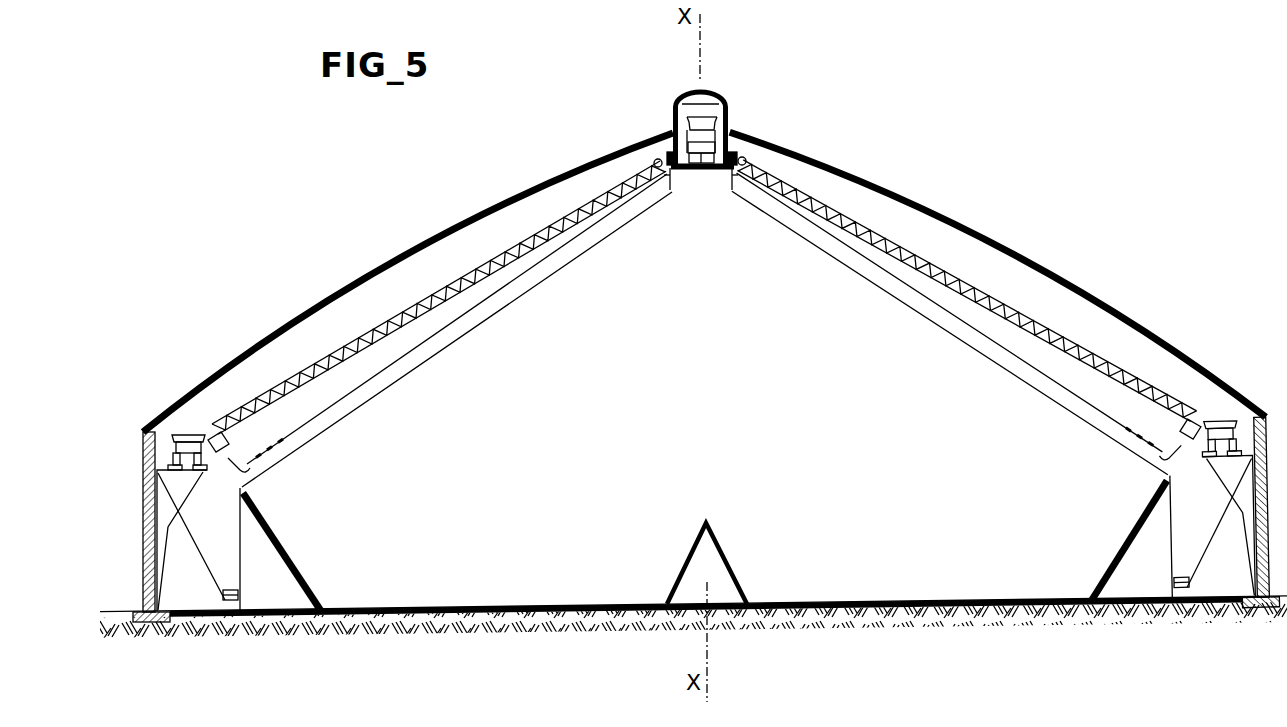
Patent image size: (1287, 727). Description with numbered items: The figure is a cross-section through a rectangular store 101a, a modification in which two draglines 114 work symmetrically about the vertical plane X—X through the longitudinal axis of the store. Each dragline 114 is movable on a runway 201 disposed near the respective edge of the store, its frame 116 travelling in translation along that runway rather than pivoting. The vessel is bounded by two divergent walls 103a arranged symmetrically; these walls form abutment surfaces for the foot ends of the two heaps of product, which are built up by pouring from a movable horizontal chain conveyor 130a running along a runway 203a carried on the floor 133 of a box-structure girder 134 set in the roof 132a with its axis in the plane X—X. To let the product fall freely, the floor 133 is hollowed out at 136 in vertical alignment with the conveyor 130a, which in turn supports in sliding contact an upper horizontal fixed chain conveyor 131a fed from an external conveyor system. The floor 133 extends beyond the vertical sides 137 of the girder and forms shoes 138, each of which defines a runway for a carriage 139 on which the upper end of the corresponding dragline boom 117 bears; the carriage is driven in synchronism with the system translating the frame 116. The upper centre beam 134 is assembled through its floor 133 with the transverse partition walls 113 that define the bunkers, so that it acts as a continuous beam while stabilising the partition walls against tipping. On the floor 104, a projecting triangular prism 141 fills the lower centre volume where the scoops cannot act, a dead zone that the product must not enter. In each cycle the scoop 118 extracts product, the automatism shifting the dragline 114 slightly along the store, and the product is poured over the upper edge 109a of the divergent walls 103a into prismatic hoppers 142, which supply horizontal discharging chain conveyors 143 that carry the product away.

The rectangular store 101a is at (1011, 248).
The divergent wall 103a is at (280, 548).
The floor 104 is at (462, 601).
The upper edge 109a is at (258, 480).
The transverse partition wall 113 is at (692, 330).
The dragline 114 is at (205, 428).
The frame 116 is at (158, 432).
The dragline boom 117 is at (438, 298).
The scoop 118 is at (237, 462).
The horizontal chain conveyor 130a is at (737, 160).
The upper horizontal fixed chain conveyor 131a is at (700, 118).
The roof 132a is at (412, 248).
The floor 133 is at (690, 170).
The box-structure girder 134 is at (729, 122).
The hollowed-out portion 136 is at (706, 170).
The vertical side 137 is at (672, 152).
The shoe 138 is at (669, 178).
The carriage 139 is at (665, 142).
The projecting triangular prism 141 is at (719, 545).
The prismatic hopper 142 is at (205, 553).
The horizontal discharging chain conveyor 143 is at (224, 596).
The runway 201 is at (184, 472).
The runway 203a is at (727, 172).